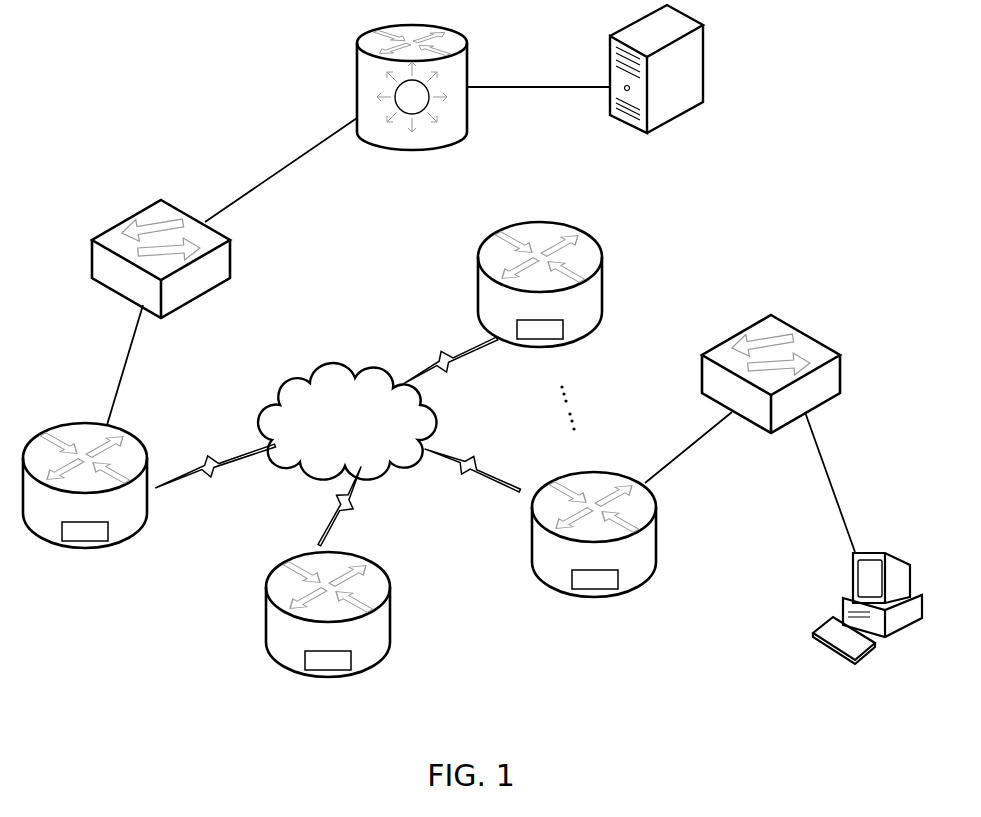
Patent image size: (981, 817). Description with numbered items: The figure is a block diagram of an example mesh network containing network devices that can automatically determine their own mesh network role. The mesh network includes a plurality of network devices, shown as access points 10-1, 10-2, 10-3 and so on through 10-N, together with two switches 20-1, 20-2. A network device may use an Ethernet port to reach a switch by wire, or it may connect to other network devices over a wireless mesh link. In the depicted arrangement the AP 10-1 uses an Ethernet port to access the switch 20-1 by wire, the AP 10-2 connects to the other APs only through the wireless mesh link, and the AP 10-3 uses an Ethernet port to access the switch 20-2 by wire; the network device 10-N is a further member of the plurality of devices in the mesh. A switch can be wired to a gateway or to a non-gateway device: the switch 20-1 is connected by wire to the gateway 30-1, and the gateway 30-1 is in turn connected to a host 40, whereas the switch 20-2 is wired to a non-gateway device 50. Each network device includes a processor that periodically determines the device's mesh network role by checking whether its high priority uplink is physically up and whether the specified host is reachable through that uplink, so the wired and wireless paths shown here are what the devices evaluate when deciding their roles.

The AP 10-1 is at (85, 485).
The AP 10-2 is at (328, 614).
The AP 10-3 is at (594, 534).
The network device 10-N is at (540, 284).
The switch 20-1 is at (161, 259).
The switch 20-2 is at (771, 374).
The gateway 30-1 is at (412, 87).
The host 40 is at (656, 69).
The non-gateway device 50 is at (867, 608).